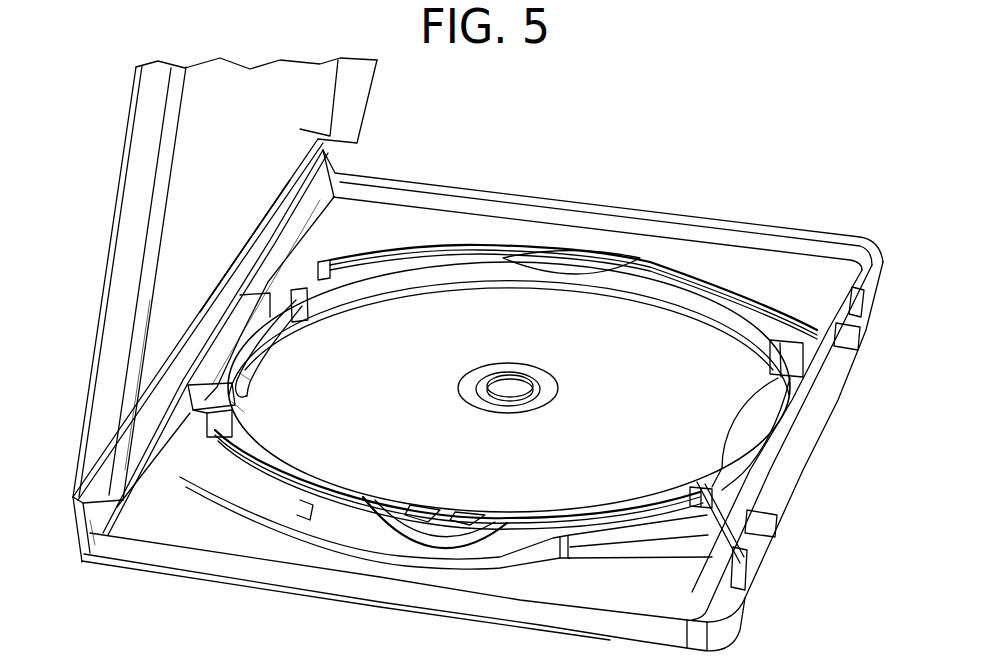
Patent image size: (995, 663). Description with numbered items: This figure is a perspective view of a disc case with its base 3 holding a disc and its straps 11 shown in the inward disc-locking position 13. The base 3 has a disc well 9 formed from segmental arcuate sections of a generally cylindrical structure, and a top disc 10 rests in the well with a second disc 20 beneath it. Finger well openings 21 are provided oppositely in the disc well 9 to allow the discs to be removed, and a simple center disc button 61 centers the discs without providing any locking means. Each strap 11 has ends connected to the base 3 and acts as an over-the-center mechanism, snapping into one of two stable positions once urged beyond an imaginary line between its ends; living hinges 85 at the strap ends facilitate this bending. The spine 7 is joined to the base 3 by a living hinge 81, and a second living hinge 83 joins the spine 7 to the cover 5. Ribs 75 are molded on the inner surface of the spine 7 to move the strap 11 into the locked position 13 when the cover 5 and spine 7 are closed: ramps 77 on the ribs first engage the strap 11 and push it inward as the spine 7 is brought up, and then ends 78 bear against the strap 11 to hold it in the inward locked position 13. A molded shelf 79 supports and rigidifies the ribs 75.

The base 3 is at (383, 215).
The cover 5 is at (276, 125).
The spine 7 is at (163, 410).
The disc well 9 is at (722, 292).
The disc 10 is at (506, 472).
The strap 11 is at (315, 336).
The inward disc-locking position 13 is at (297, 348).
The second disc 20 is at (427, 522).
The finger well opening 21 is at (573, 265).
The center disc button 61 is at (507, 378).
The rib 75 is at (200, 398).
The ramp 77 is at (237, 408).
The end 78 is at (243, 378).
The molded shelf 79 is at (237, 323).
The living hinge 81 is at (128, 497).
The living hinge 83 is at (282, 206).
The living hinge 85 is at (300, 297).